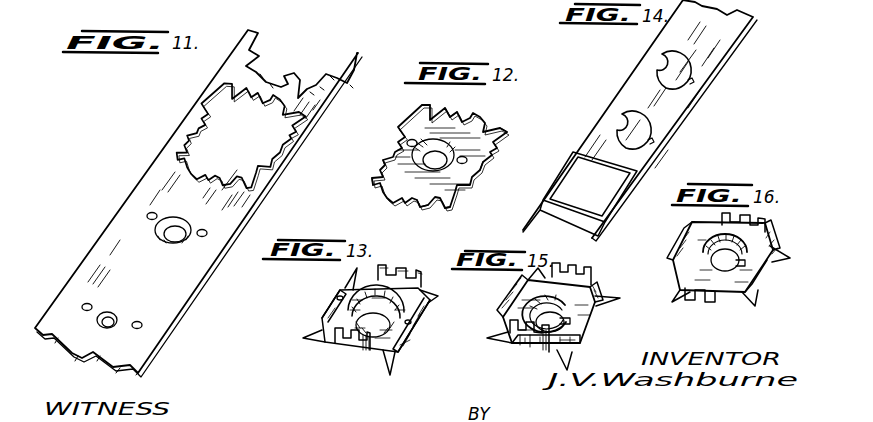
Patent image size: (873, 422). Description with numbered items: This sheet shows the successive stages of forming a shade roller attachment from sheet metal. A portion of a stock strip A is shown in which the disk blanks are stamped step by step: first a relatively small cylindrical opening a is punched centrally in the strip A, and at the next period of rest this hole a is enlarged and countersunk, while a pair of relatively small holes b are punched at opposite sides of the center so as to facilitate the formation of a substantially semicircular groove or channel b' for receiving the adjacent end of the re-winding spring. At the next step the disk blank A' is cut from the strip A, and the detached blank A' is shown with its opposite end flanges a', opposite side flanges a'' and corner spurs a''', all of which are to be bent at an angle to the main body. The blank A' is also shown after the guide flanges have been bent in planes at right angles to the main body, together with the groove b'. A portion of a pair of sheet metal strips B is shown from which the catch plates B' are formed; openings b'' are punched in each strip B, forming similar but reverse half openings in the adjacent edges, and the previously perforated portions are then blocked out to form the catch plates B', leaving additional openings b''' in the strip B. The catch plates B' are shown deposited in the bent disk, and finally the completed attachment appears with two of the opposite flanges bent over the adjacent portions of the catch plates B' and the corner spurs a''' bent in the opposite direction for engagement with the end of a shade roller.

In FIG. 11, the stock strip A is at (198, 203).
In FIG. 11, the cylindrical opening a is at (144, 283).
In FIG. 12, the cylindrical opening a is at (433, 155).
In FIG. 13, the cylindrical opening a is at (373, 325).
In FIG. 15, the cylindrical opening a is at (547, 346).
In FIG. 16, the cylindrical opening a is at (722, 288).
In FIG. 11, the small holes b is at (144, 271).
In FIG. 12, the small holes b is at (438, 143).
In FIG. 13, the small holes b is at (372, 317).
In FIG. 12, the disk blank A' is at (426, 158).
In FIG. 12, the end flanges a' is at (433, 159).
In FIG. 13, the end flanges a' is at (378, 311).
In FIG. 15, the end flanges a' is at (544, 309).
In FIG. 16, the end flanges a' is at (726, 260).
In FIG. 12, the side flanges a'' is at (430, 158).
In FIG. 13, the side flanges a'' is at (380, 321).
In FIG. 15, the side flanges a'' is at (553, 309).
In FIG. 16, the side flanges a'' is at (736, 249).
In FIG. 12, the corner spurs a''' is at (439, 157).
In FIG. 13, the corner spurs a''' is at (376, 327).
In FIG. 15, the corner spurs a''' is at (551, 330).
In FIG. 16, the corner spurs a''' is at (728, 271).
In FIG. 13, the semicircular groove b' is at (399, 302).
In FIG. 14, the sheet metal strips B is at (640, 120).
In FIG. 14, the openings b'' is at (684, 100).
In FIG. 15, the openings b'' is at (523, 312).
In FIG. 16, the openings b'' is at (738, 253).
In FIG. 14, the additional openings b''' is at (594, 194).
In FIG. 15, the catch plates B' is at (570, 291).
In FIG. 16, the catch plates B' is at (719, 261).